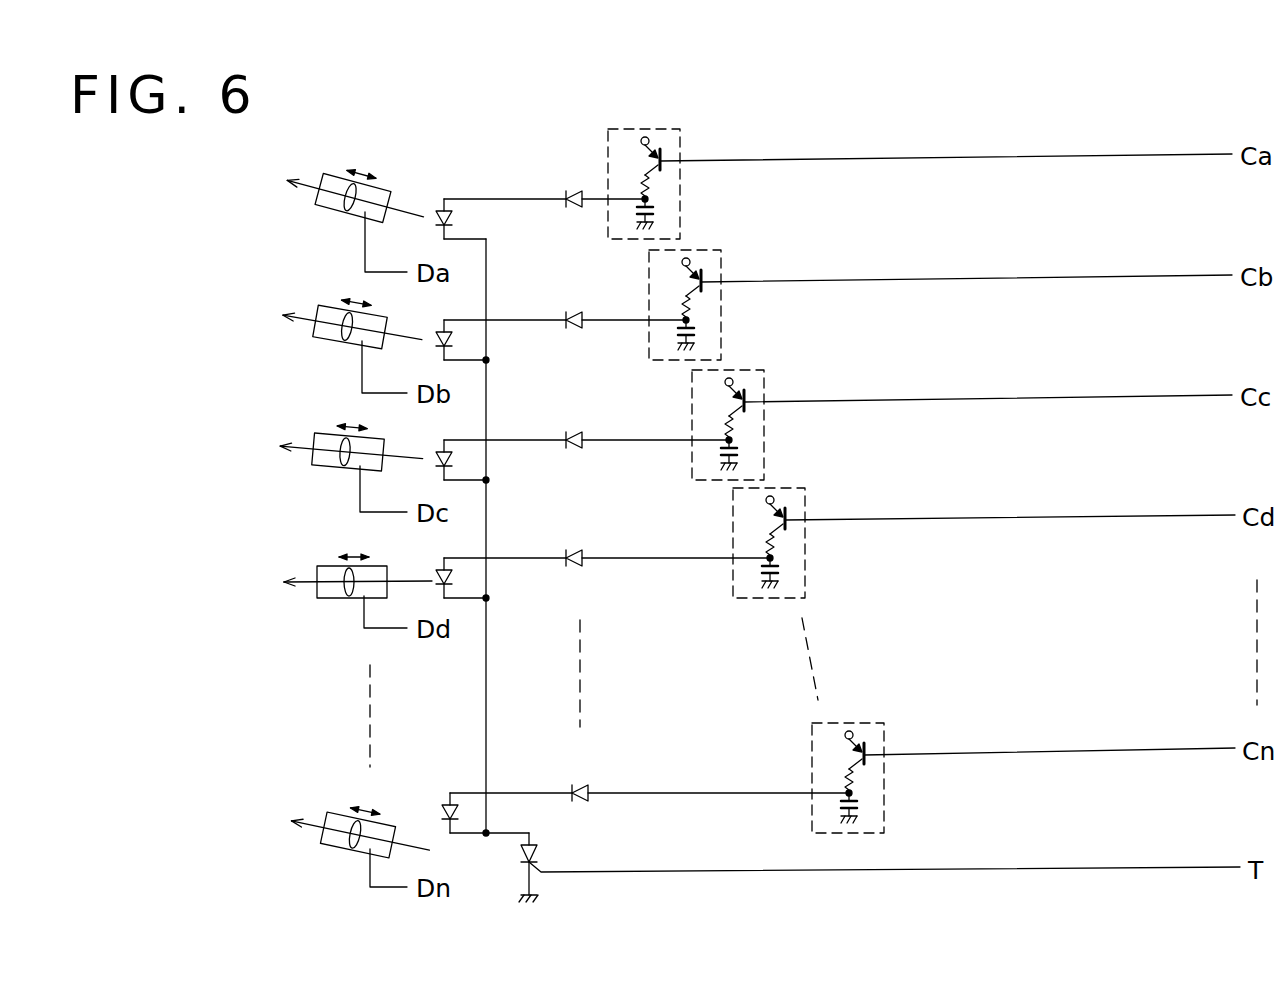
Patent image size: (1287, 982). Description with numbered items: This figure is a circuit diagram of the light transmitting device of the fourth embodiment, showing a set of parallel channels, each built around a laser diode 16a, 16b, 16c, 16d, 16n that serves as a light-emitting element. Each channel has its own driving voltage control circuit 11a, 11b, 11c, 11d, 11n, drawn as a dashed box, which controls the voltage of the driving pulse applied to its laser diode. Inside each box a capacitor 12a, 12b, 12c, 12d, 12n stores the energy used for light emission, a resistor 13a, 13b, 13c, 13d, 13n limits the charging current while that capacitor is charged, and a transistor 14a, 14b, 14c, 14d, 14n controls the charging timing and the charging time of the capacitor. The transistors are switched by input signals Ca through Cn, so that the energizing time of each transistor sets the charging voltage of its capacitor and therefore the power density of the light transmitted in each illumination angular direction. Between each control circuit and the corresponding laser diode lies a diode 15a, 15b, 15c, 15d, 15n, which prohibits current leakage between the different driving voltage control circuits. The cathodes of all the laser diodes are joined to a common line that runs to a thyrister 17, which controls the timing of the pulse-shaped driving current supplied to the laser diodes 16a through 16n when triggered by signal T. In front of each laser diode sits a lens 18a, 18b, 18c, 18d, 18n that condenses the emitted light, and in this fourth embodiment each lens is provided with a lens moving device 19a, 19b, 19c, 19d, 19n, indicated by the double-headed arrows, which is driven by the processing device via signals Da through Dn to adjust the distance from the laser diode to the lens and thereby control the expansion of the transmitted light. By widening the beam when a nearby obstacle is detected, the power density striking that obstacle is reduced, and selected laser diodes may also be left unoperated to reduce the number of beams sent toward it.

The driving voltage control circuit 11a is at (680, 129).
The driving voltage control circuit 11b is at (720, 288).
The driving voltage control circuit 11c is at (762, 408).
The driving voltage control circuit 11d is at (804, 526).
The driving voltage control circuit 11n is at (882, 722).
The capacitor 12a is at (655, 210).
The capacitor 12b is at (735, 336).
The capacitor 12c is at (777, 456).
The capacitor 12d is at (819, 574).
The capacitor 12n is at (858, 805).
The resistor 13a is at (650, 186).
The resistor 13b is at (737, 305).
The resistor 13c is at (779, 425).
The resistor 13d is at (821, 543).
The resistor 13n is at (853, 780).
The transistor 14a is at (662, 152).
The transistor 14b is at (737, 273).
The transistor 14c is at (779, 393).
The transistor 14d is at (821, 511).
The transistor 14n is at (867, 750).
The diode 15a is at (568, 184).
The diode 15b is at (559, 289).
The diode 15c is at (558, 409).
The diode 15d is at (590, 530).
The diode 15n is at (572, 769).
The laser diode 16a is at (454, 215).
The laser diode 16b is at (494, 340).
The laser diode 16c is at (495, 460).
The laser diode 16d is at (496, 580).
The laser diode 16n is at (499, 813).
The thyrister 17 is at (538, 851).
The lens 18a is at (363, 190).
The lens 18b is at (360, 322).
The lens 18c is at (360, 448).
The lens 18d is at (362, 577).
The lens 18n is at (365, 822).
The lens moving device 19a is at (323, 181).
The lens moving device 19b is at (330, 310).
The lens moving device 19c is at (330, 437).
The lens moving device 19d is at (335, 566).
The lens moving device 19n is at (333, 823).